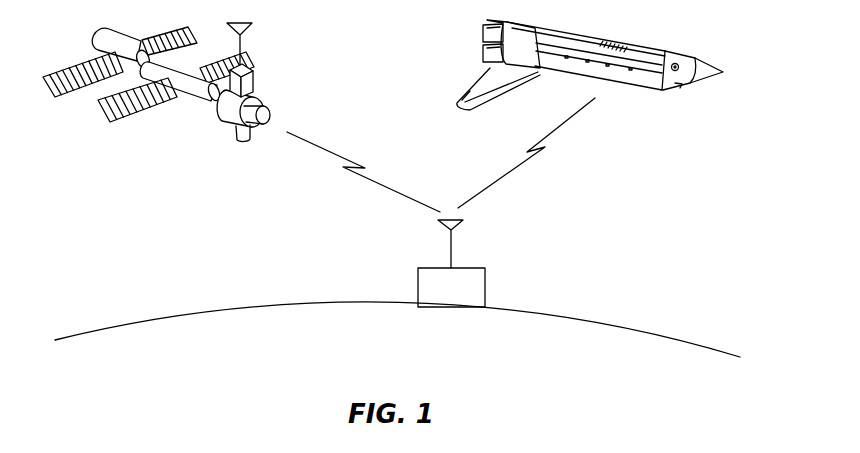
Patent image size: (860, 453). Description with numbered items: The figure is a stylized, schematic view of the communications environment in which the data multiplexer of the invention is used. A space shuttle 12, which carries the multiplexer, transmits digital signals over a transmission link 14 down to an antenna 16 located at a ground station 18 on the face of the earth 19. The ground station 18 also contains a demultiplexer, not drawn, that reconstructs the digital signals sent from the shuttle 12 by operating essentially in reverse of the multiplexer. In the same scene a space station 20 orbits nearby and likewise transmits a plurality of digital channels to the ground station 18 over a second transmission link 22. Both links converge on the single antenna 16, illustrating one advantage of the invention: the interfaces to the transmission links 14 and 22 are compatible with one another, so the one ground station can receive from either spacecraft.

The space shuttle 12 is at (640, 88).
The transmission link 14 is at (546, 166).
The antenna 16 is at (453, 243).
The ground station 18 is at (485, 283).
The earth 19 is at (165, 312).
The space station 20 is at (140, 113).
The transmission link 22 is at (346, 185).